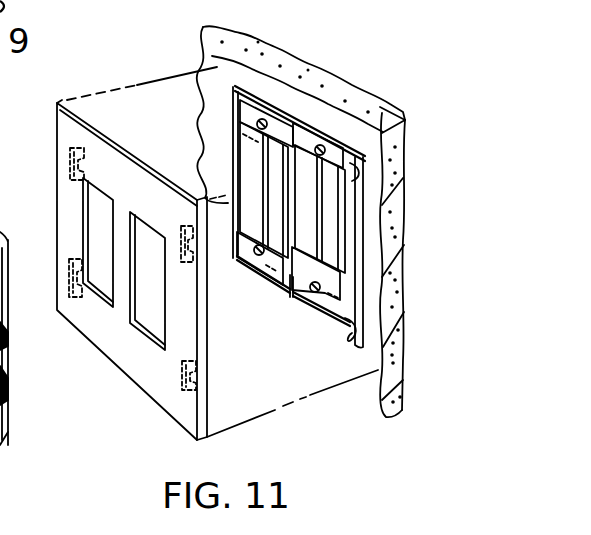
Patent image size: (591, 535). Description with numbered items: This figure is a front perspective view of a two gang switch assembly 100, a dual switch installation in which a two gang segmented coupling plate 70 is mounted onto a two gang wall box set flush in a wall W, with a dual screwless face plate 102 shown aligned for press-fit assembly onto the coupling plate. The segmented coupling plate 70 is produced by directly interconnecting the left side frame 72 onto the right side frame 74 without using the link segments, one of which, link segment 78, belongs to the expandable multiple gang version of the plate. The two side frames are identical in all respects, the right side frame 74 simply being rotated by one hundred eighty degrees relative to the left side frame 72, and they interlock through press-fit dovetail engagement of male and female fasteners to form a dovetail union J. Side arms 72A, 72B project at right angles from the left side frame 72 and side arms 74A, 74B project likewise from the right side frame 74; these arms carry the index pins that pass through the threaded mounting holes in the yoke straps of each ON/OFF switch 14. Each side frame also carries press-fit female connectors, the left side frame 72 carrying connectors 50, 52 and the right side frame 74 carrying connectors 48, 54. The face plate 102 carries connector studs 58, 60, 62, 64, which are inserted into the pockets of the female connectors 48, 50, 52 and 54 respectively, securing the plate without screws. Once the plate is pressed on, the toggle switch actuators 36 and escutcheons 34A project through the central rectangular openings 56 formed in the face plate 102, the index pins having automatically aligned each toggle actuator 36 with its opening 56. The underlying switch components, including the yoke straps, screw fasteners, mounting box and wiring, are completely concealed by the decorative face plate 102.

The ON/OFF switch 14 is at (200, 68).
The escutcheon 34A is at (326, 312).
The toggle switch actuator 36 is at (263, 184).
The press-fit female connector 48 is at (358, 325).
The press-fit female connector 50 is at (206, 151).
The press-fit female connector 52 is at (206, 96).
The press-fit female connector 54 is at (400, 88).
The central rectangular opening 56 is at (111, 243).
The connector stud 58 is at (180, 372).
The connector stud 60 is at (66, 272).
The connector stud 62 is at (63, 148).
The connector stud 64 is at (180, 241).
The segmented coupling plate 70 is at (286, 96).
The left side frame 72 is at (207, 132).
The side arm 72A is at (278, 290).
The side arm 72B is at (274, 93).
The right side frame 74 is at (334, 316).
The side arm 74A is at (338, 310).
The side arm 74B is at (330, 152).
The link segment 78 is at (8, 424).
The two gang switch assembly 100 is at (321, 117).
The two gang screwless face plate 102 is at (58, 118).
The dovetail union J is at (301, 99).
The wall W is at (237, 20).